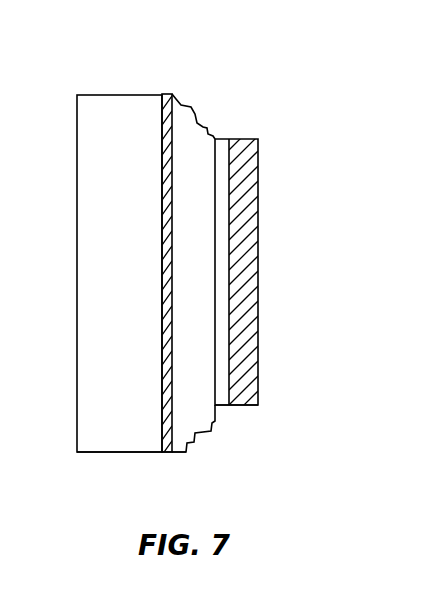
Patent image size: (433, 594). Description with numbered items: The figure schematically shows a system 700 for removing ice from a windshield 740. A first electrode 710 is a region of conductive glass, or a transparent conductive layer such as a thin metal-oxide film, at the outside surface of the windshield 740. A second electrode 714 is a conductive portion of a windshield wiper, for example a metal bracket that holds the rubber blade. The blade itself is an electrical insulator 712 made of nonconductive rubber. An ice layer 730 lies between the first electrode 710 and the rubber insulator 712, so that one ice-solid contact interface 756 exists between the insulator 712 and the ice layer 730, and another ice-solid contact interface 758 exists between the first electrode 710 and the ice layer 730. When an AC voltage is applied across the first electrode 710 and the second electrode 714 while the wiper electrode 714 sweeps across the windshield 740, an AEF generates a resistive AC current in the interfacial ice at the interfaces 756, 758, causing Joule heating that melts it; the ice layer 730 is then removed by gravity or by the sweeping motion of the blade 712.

The system 700 is at (118, 36).
The first electrode 710 is at (173, 455).
The electrical insulator 712 is at (227, 407).
The second electrode 714 is at (253, 295).
The ice layer 730 is at (197, 428).
The windshield 740 is at (138, 223).
The ice-solid contact interface 756 is at (218, 134).
The ice-solid contact interface 758 is at (170, 93).